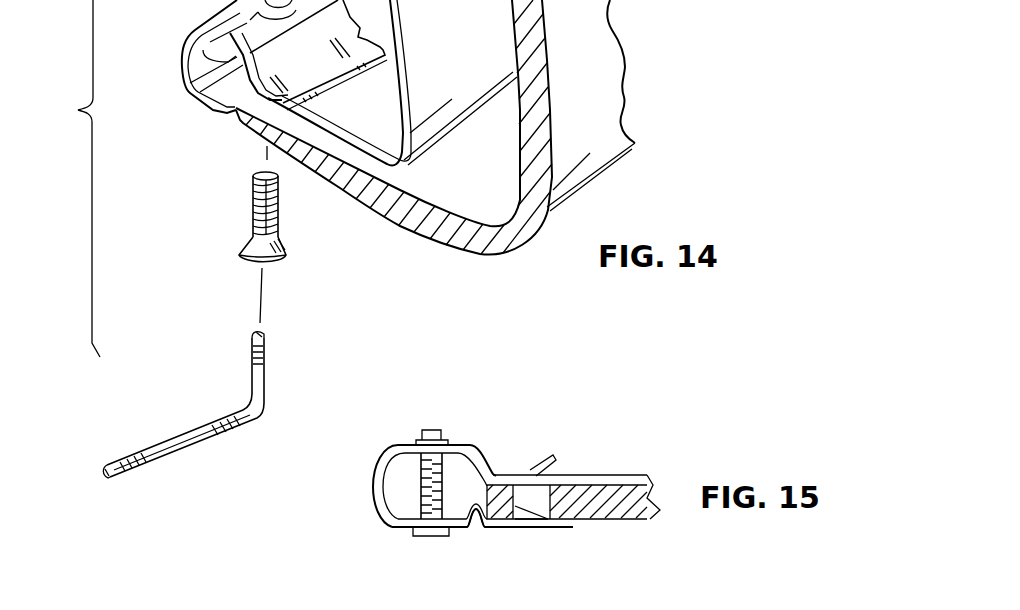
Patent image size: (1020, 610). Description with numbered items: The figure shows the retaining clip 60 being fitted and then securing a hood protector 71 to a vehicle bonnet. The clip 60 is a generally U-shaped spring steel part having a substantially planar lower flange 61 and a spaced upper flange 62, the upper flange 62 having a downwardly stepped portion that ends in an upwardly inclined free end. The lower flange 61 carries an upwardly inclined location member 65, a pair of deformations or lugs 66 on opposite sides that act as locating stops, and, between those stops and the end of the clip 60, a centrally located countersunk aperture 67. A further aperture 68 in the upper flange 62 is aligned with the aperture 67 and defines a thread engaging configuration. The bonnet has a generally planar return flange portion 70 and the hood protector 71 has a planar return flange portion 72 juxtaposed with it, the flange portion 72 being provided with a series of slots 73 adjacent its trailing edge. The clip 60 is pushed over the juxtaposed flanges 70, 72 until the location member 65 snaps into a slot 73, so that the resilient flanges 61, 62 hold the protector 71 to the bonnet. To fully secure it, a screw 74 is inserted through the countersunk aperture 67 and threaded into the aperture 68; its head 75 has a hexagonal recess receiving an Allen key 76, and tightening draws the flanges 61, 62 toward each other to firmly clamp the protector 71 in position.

In FIG. 15, the retaining clip 60 is at (508, 471).
In FIG. 14, the lower flange 61 is at (203, 112).
In FIG. 15, the upper flange 62 is at (462, 437).
In FIG. 15, the location member 65 is at (528, 520).
In FIG. 15, the lugs 66 is at (474, 529).
In FIG. 15, the countersunk aperture 67 is at (410, 528).
In FIG. 15, the aperture 68 is at (420, 430).
In FIG. 15, the return flange portion 70 is at (590, 477).
In FIG. 14, the hood protector 71 is at (608, 92).
In FIG. 15, the return flange portion 72 is at (650, 517).
In FIG. 15, the slots 73 is at (573, 520).
In FIG. 14, the screw 74 is at (274, 243).
In FIG. 15, the screw 74 is at (413, 500).
In FIG. 14, the head 75 is at (247, 247).
In FIG. 14, the Allen key 76 is at (244, 384).